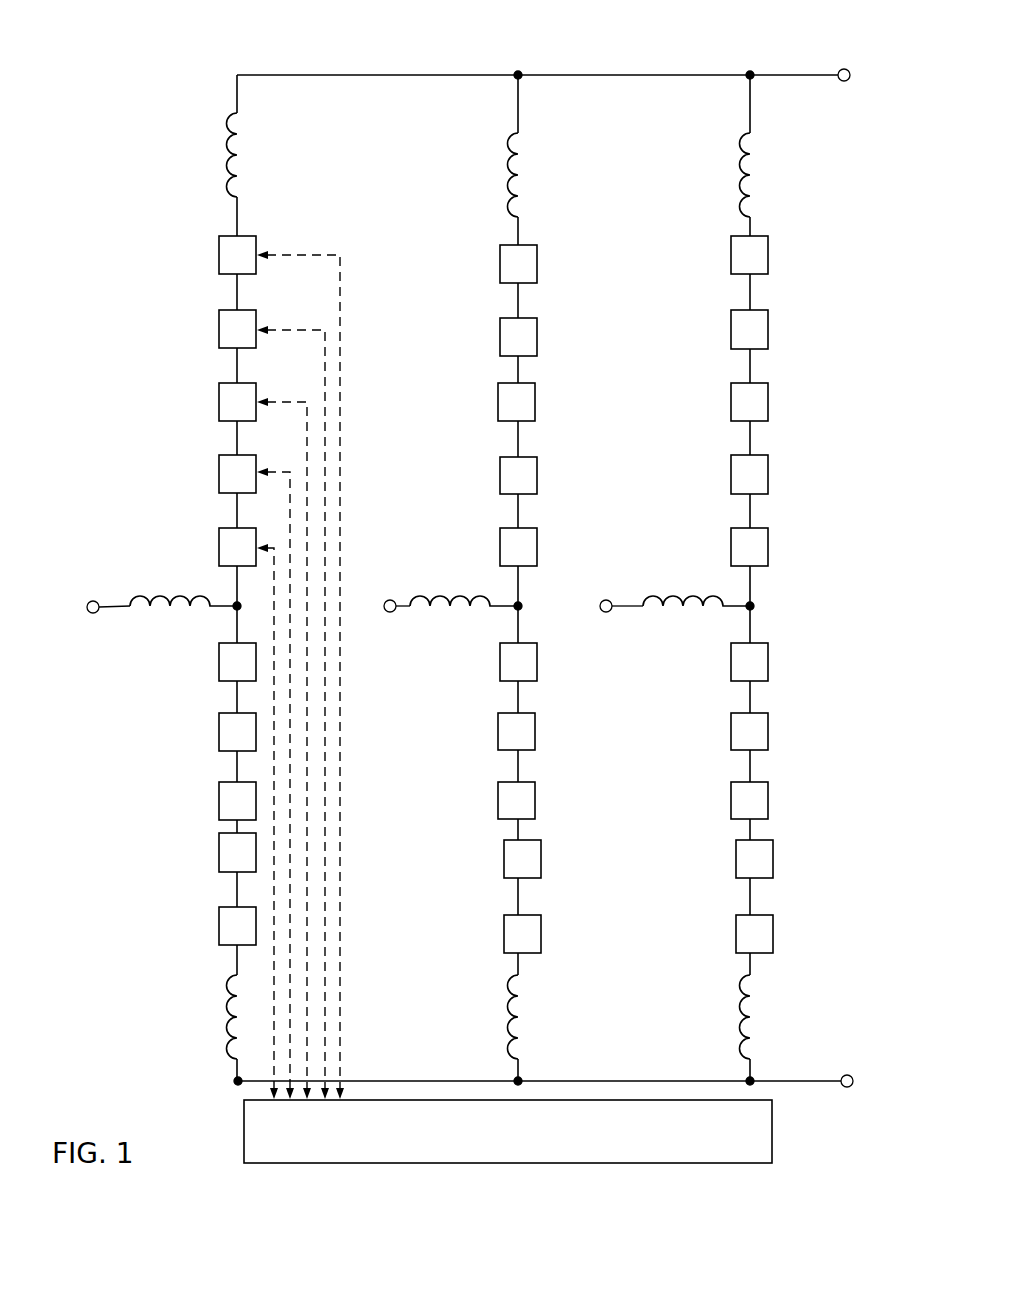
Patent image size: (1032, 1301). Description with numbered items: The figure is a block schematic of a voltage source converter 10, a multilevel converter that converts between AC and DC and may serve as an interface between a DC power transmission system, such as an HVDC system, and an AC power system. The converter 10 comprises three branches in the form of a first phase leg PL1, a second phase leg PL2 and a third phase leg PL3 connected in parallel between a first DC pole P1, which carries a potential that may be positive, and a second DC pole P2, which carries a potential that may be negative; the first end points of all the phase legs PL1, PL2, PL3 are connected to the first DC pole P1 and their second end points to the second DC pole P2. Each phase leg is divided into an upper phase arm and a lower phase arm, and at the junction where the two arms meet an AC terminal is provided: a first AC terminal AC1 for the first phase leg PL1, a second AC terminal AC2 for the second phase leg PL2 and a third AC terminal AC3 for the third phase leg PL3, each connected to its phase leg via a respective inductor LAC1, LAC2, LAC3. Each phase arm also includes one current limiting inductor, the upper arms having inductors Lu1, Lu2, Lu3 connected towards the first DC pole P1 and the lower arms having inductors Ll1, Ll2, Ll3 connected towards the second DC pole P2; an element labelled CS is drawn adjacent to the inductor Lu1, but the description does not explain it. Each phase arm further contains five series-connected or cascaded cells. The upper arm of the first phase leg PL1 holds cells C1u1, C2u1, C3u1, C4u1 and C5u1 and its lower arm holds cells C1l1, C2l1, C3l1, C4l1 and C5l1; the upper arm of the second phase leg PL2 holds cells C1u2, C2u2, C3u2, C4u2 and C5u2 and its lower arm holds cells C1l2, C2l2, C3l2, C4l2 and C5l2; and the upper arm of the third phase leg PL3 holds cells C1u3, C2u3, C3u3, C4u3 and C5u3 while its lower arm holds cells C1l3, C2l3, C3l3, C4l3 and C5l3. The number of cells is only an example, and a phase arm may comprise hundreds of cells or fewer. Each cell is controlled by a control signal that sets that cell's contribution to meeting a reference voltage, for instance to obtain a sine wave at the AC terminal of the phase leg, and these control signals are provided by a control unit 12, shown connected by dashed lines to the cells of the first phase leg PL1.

The voltage source converter 10 is at (180, 40).
The control unit 12 is at (244, 1134).
The first phase leg PL1 is at (146, 555).
The second phase leg PL2 is at (468, 555).
The third phase leg PL3 is at (659, 555).
The first DC pole P1 is at (829, 73).
The second DC pole P2 is at (825, 1078).
The current limiting inductor Lu1 is at (196, 155).
The current limiting inductor Lu2 is at (479, 175).
The current limiting inductor Lu3 is at (714, 175).
The current limiting inductor Ll1 is at (209, 1017).
The current limiting inductor Ll2 is at (487, 1017).
The current limiting inductor Ll3 is at (720, 1017).
The current sensor CS is at (171, 202).
The first AC terminal AC1 is at (81, 620).
The second AC terminal AC2 is at (410, 591).
The third AC terminal AC3 is at (594, 592).
The inductor LAC1 is at (183, 618).
The inductor LAC2 is at (464, 618).
The inductor LAC3 is at (696, 618).
The cell C1u1 is at (195, 256).
The cell C2u1 is at (195, 330).
The cell C3u1 is at (195, 402).
The cell C4u1 is at (195, 474).
The cell C5u1 is at (195, 547).
The cell C1l1 is at (200, 662).
The cell C2l1 is at (200, 732).
The cell C3l1 is at (200, 801).
The cell C4l1 is at (200, 853).
The cell C5l1 is at (200, 927).
The cell C1u2 is at (476, 264).
The cell C2u2 is at (476, 339).
The cell C3u2 is at (475, 403).
The cell C4u2 is at (476, 476).
The cell C5u2 is at (476, 547).
The cell C1l2 is at (481, 662).
The cell C2l2 is at (480, 731).
The cell C3l2 is at (480, 802).
The cell C4l2 is at (484, 860).
The cell C5l2 is at (485, 934).
The cell C1u3 is at (707, 257).
The cell C2u3 is at (707, 331).
The cell C3u3 is at (707, 402).
The cell C4u3 is at (707, 475).
The cell C5u3 is at (710, 547).
The cell C1l3 is at (712, 662).
The cell C2l3 is at (712, 731).
The cell C3l3 is at (712, 802).
The cell C4l3 is at (717, 860).
The cell C5l3 is at (718, 934).